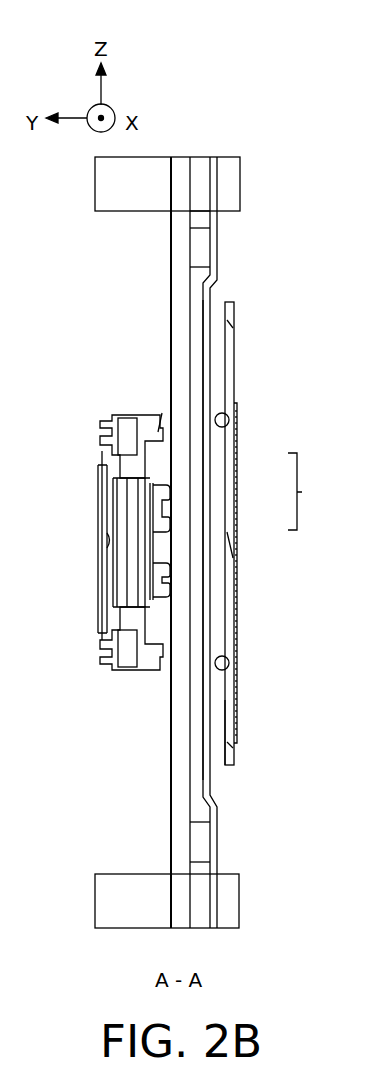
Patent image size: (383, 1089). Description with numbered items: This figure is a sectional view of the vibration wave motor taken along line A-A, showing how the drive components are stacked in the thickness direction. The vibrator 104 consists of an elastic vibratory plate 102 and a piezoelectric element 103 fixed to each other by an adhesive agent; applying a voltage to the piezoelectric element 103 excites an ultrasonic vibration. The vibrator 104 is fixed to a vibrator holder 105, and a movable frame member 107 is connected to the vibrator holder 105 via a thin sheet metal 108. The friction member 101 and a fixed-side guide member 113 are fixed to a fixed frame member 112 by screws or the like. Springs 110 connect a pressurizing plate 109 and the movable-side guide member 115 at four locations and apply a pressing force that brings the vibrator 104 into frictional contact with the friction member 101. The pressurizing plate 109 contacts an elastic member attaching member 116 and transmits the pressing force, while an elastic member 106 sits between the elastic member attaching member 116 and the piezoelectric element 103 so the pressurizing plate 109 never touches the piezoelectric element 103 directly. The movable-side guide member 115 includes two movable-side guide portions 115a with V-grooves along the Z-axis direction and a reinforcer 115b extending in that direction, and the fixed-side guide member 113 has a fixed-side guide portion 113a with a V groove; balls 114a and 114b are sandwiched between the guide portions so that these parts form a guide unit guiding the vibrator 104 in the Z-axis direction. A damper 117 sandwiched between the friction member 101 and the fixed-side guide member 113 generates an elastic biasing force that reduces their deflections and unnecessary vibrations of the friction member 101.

The friction member 101 is at (182, 892).
The vibratory plate 102 is at (153, 542).
The piezoelectric element 103 is at (145, 483).
The vibrator 104 is at (321, 491).
The vibrator holder 105 is at (147, 412).
The elastic member 106 is at (118, 497).
The movable frame member 107 is at (123, 412).
The thin sheet metal 108 is at (112, 443).
The pressurizing plate 109 is at (100, 515).
The springs 110 is at (170, 640).
The fixed frame member 112 is at (95, 913).
The fixed-side guide member 113 is at (213, 848).
The fixed-side guide portion 113a is at (208, 777).
The ball 114a is at (227, 422).
The ball 114b is at (223, 667).
The movable-side guide member 115 is at (233, 313).
The movable-side guide portion 115a is at (228, 725).
The reinforcer 115b is at (233, 642).
The elastic member attaching member 116 is at (117, 562).
The damper 117 is at (200, 248).